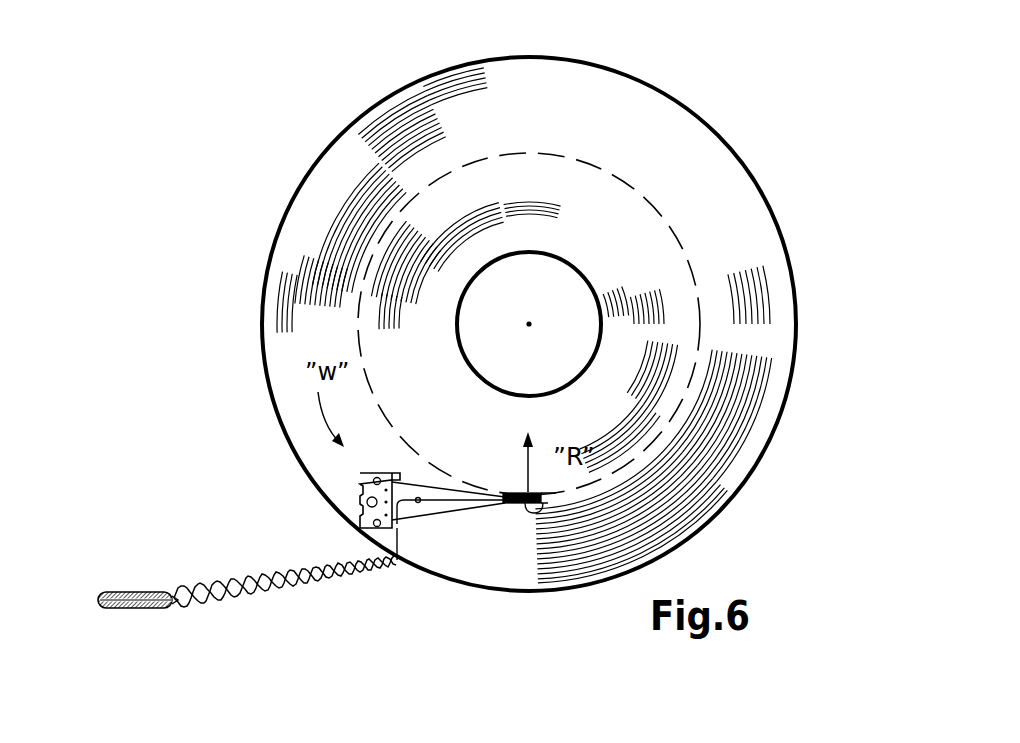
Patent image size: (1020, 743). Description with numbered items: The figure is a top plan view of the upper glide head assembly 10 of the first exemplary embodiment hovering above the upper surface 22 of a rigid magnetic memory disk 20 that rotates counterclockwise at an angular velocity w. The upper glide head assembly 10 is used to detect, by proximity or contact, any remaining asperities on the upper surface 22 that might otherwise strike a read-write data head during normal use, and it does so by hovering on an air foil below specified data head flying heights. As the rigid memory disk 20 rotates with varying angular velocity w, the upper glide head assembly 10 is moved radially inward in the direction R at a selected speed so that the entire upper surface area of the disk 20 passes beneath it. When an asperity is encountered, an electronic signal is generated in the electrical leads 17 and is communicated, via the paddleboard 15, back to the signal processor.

The rigid magnetic memory disk 20 is at (606, 95).
The upper surface 22 is at (338, 342).
The upper glide head assembly 10 is at (454, 540).
The electrical leads 17 is at (258, 580).
The paddleboard 15 is at (137, 592).